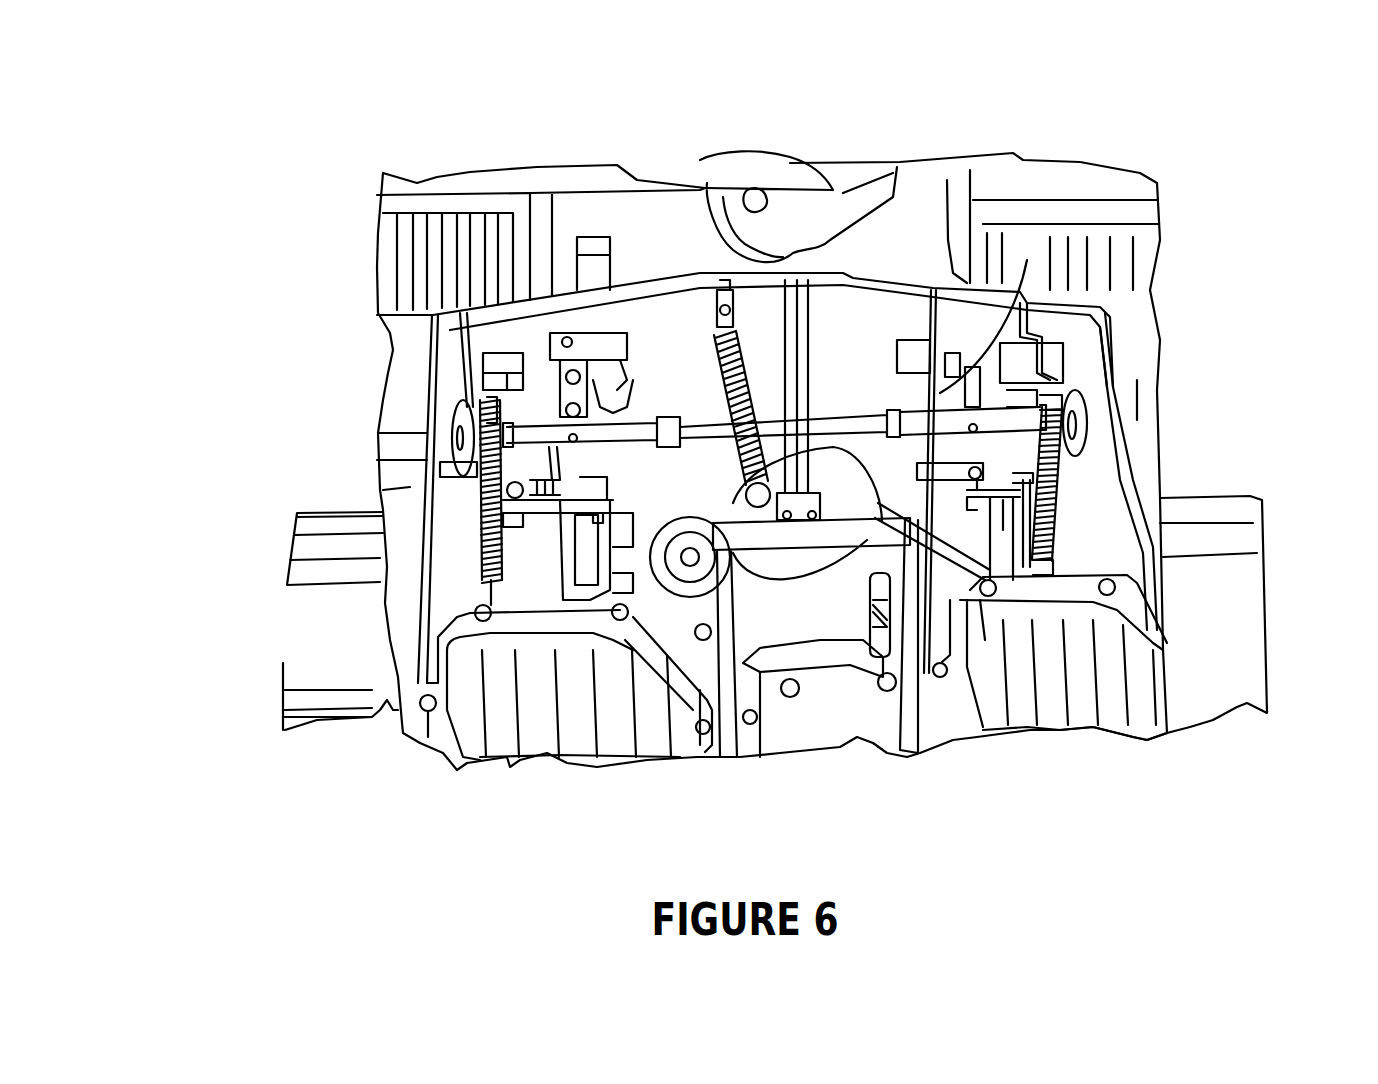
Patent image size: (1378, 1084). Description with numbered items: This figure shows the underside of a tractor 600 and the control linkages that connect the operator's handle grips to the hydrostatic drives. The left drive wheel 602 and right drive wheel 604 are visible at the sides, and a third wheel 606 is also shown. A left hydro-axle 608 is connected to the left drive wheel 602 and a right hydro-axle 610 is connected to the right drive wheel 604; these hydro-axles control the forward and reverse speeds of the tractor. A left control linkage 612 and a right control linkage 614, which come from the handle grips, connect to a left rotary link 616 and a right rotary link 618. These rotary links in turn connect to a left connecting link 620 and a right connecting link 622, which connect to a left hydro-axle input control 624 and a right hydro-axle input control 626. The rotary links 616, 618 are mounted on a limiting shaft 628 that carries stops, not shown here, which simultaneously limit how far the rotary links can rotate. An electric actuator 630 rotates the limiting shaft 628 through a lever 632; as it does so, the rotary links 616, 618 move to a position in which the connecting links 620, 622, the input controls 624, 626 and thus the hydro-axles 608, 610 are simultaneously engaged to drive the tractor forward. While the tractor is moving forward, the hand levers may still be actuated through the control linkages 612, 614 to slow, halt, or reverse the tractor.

The tractor 600 is at (1060, 325).
The left drive wheel 602 is at (313, 693).
The right drive wheel 604 is at (1200, 697).
The third wheel 606 is at (838, 192).
The left hydro-axle 608 is at (507, 757).
The right hydro-axle 610 is at (1113, 703).
The left control linkage 612 is at (482, 405).
The right control linkage 614 is at (1075, 318).
The left rotary link 616 is at (430, 463).
The right rotary link 618 is at (1060, 390).
The left connecting link 620 is at (478, 498).
The right connecting link 622 is at (967, 460).
The left hydro-axle input control 624 is at (560, 548).
The right hydro-axle input control 626 is at (953, 592).
The limiting shaft 628 is at (672, 415).
The electric actuator 630 is at (913, 390).
The lever 632 is at (1027, 260).